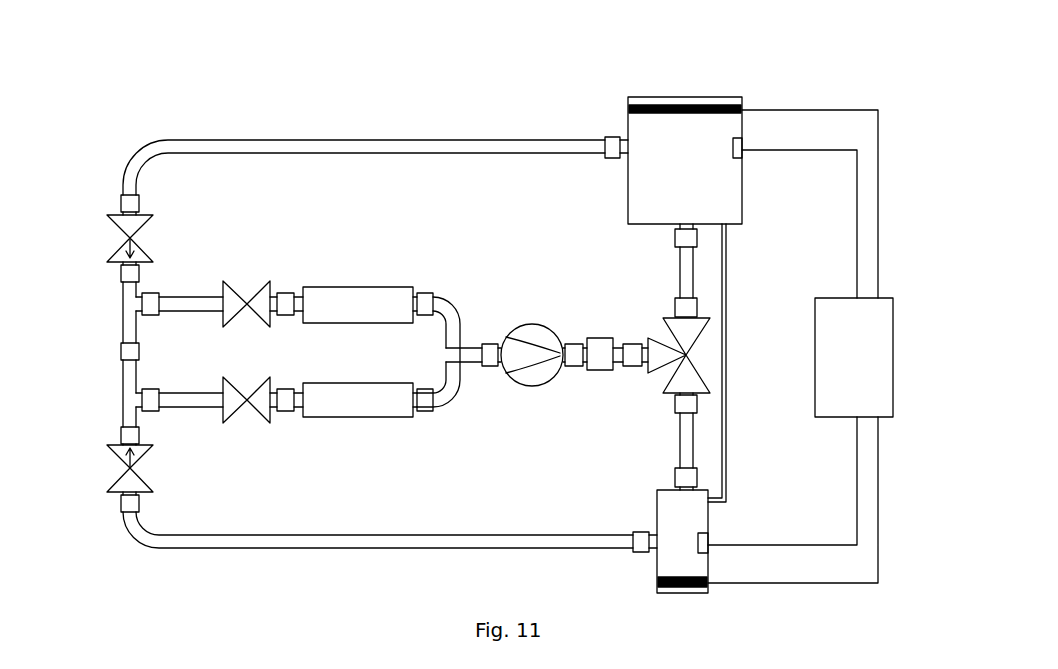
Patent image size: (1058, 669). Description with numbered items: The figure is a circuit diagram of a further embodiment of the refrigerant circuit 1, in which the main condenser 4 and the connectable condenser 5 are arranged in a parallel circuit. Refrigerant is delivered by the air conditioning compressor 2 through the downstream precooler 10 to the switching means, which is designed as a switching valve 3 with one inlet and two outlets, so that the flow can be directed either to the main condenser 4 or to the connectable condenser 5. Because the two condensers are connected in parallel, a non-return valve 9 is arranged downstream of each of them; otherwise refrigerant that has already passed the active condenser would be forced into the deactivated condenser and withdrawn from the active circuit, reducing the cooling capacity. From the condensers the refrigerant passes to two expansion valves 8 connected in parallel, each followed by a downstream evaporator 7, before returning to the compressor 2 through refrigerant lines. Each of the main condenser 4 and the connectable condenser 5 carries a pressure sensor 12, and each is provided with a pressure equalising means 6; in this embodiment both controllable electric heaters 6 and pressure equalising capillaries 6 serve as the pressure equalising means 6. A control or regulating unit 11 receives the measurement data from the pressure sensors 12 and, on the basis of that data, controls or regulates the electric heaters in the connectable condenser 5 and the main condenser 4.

The refrigerant circuit 1 is at (378, 95).
The air conditioning compressor 2 is at (530, 332).
The switching valve 3 is at (685, 373).
The main condenser 4 is at (668, 547).
The connectable condenser 5 is at (647, 192).
The pressure equalising means 6 is at (642, 105).
The evaporator 7 is at (333, 305).
The expansion valve 8 is at (232, 305).
The non-return valve 9 is at (112, 258).
The precooler 10 is at (607, 360).
The control or regulating unit 11 is at (873, 367).
The pressure sensor 12 is at (740, 153).